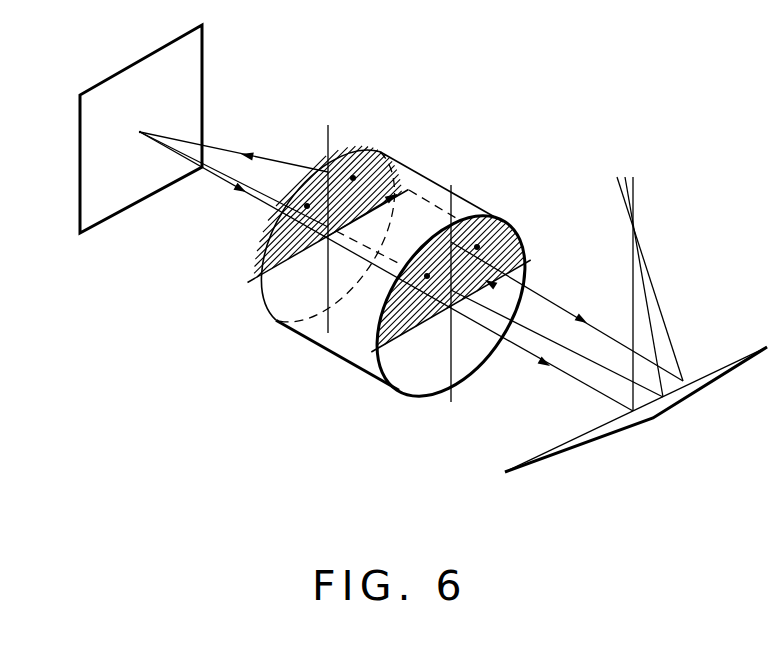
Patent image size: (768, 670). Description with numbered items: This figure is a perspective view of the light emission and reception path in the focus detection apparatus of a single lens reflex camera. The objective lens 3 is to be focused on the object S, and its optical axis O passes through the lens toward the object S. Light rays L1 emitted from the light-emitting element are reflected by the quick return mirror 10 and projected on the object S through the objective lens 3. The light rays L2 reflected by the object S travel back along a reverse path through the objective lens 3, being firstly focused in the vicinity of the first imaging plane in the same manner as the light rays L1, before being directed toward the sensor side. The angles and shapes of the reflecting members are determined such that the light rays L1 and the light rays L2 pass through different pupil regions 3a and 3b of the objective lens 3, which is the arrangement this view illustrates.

The object S is at (195, 62).
The optical axis O is at (218, 172).
The objective lens 3 is at (412, 160).
The pupil region 3a is at (362, 146).
The pupil region 3b is at (257, 253).
The light rays L1 is at (562, 303).
The light rays L2 is at (523, 350).
The quick return mirror 10 is at (618, 430).